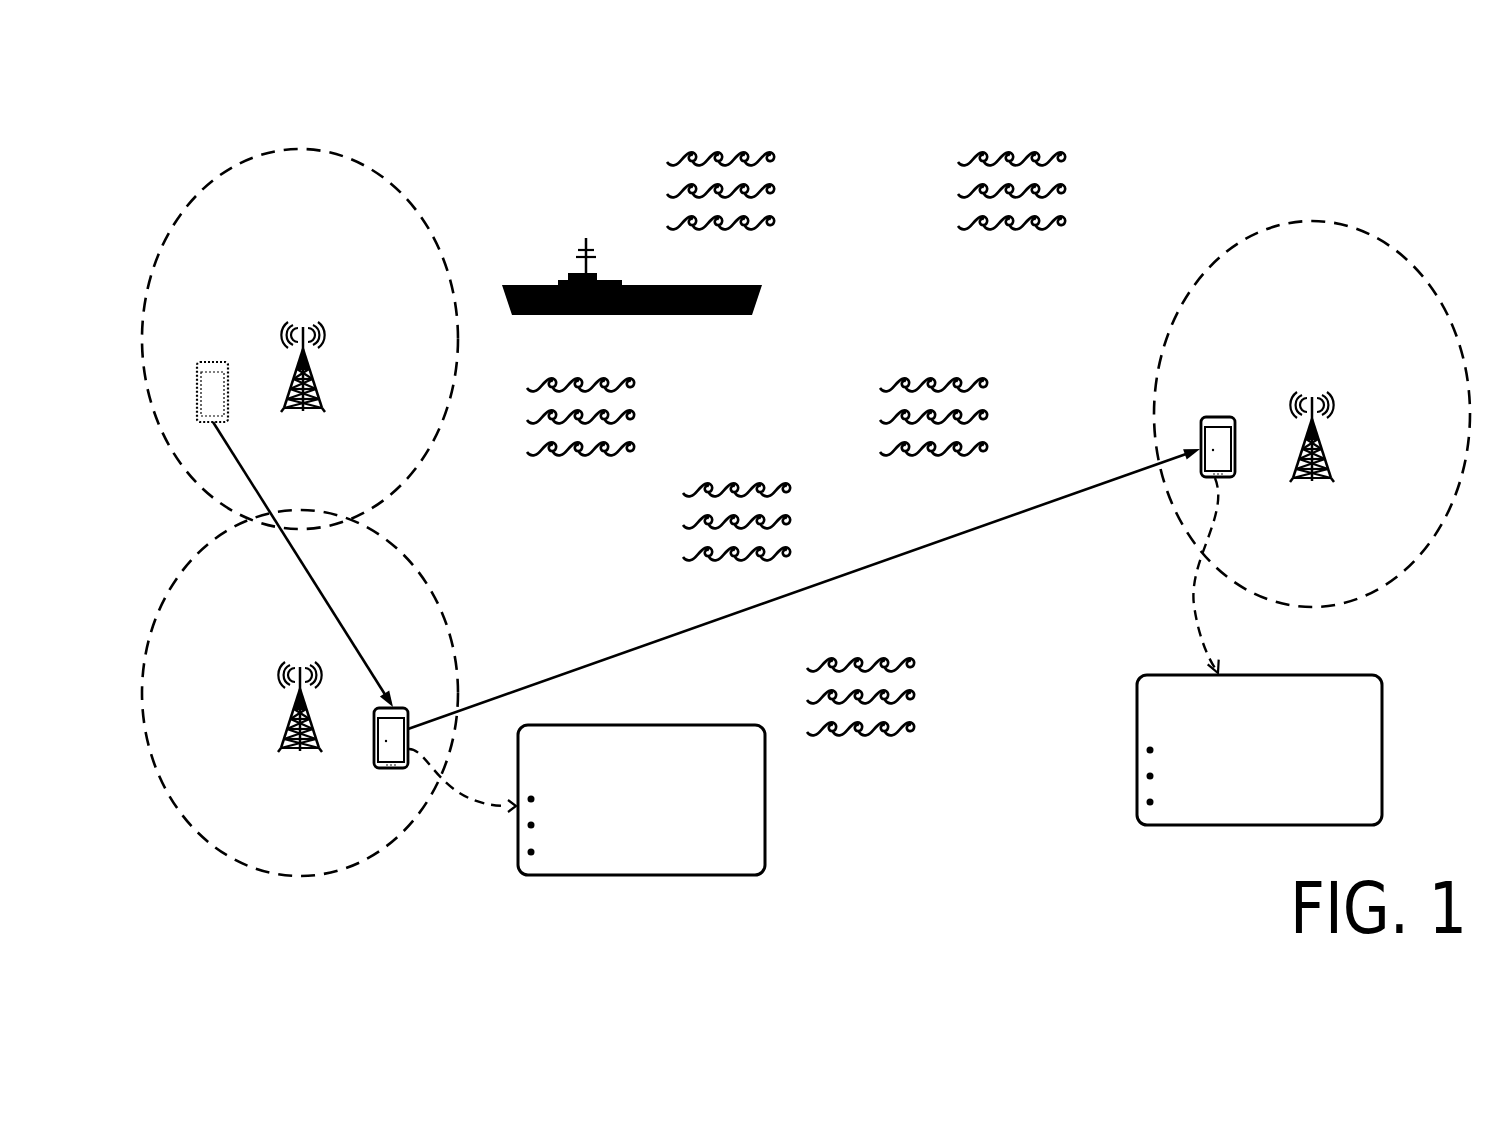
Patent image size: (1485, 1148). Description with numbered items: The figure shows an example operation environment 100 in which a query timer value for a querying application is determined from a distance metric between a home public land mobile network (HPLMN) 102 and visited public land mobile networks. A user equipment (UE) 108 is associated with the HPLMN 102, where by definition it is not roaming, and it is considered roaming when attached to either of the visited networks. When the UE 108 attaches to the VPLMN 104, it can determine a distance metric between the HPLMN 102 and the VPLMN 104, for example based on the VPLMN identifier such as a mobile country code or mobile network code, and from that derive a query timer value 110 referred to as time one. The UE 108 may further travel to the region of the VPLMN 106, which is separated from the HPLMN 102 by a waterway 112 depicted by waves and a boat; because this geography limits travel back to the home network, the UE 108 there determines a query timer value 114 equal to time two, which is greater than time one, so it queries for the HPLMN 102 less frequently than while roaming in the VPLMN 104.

The operation environment 100 is at (196, 112).
The home public land mobile network (HPLMN) 102 is at (308, 150).
The visited public land mobile network (VPLMN) 104 is at (316, 876).
The visited public land mobile network (VPLMN) 106 is at (1350, 222).
The user equipment (UE) 108 is at (230, 407).
The query timer value 110 is at (587, 800).
The waterway 112 is at (865, 155).
The query timer value 114 is at (1259, 651).